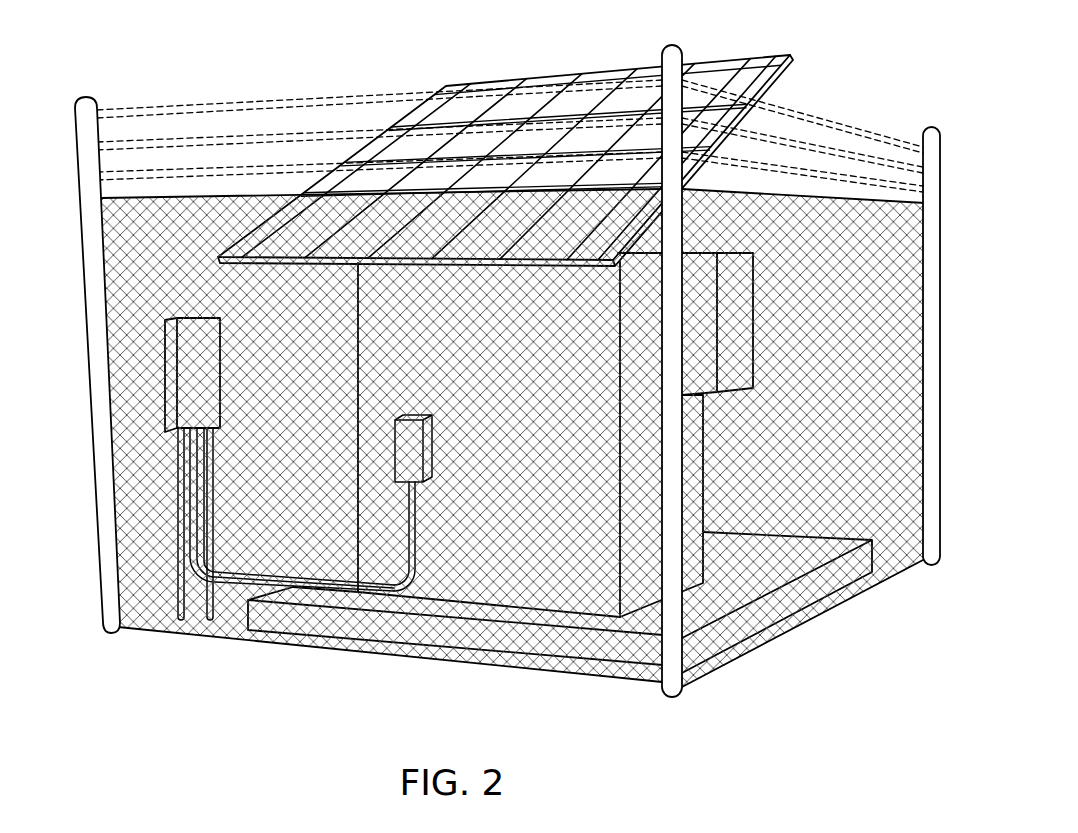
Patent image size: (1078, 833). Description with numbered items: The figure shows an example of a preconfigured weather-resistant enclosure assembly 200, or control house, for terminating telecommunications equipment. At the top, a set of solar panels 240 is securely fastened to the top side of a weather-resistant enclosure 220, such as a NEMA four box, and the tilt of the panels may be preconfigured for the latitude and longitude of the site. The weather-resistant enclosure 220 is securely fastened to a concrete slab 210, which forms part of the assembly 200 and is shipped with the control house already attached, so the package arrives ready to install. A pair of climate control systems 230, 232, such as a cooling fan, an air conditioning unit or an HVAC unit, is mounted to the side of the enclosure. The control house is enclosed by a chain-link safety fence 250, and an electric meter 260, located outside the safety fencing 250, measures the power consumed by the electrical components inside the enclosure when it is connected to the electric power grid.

The preconfigured weather-resistant enclosure assembly 200 is at (262, 724).
The concrete slab 210 is at (425, 640).
The weather-resistant enclosure 220 is at (607, 610).
The climate control system 230 is at (700, 253).
The climate control system 232 is at (748, 253).
The solar panels 240 is at (768, 60).
The chain-link safety fence 250 is at (92, 433).
The electric meter 260 is at (165, 380).